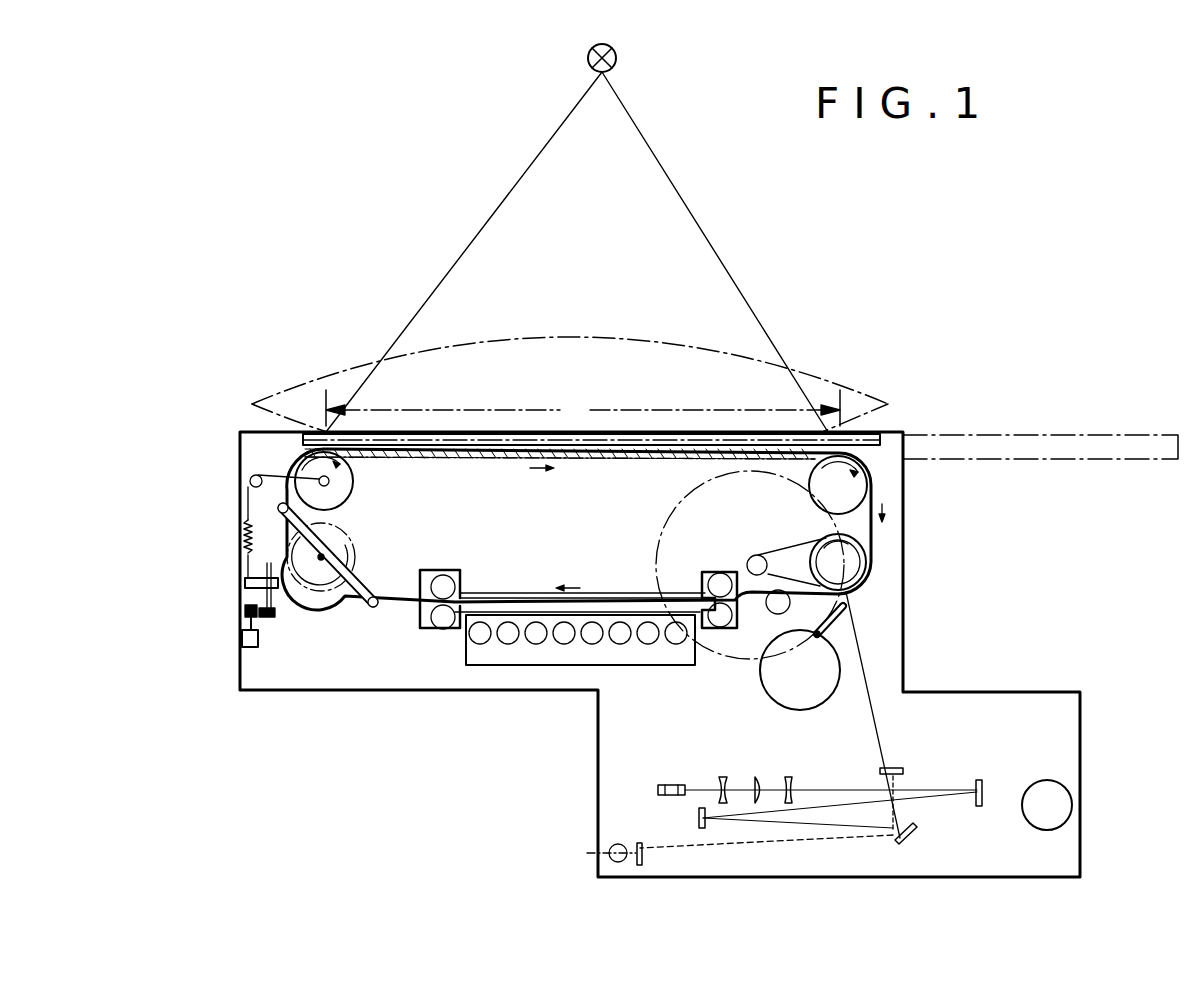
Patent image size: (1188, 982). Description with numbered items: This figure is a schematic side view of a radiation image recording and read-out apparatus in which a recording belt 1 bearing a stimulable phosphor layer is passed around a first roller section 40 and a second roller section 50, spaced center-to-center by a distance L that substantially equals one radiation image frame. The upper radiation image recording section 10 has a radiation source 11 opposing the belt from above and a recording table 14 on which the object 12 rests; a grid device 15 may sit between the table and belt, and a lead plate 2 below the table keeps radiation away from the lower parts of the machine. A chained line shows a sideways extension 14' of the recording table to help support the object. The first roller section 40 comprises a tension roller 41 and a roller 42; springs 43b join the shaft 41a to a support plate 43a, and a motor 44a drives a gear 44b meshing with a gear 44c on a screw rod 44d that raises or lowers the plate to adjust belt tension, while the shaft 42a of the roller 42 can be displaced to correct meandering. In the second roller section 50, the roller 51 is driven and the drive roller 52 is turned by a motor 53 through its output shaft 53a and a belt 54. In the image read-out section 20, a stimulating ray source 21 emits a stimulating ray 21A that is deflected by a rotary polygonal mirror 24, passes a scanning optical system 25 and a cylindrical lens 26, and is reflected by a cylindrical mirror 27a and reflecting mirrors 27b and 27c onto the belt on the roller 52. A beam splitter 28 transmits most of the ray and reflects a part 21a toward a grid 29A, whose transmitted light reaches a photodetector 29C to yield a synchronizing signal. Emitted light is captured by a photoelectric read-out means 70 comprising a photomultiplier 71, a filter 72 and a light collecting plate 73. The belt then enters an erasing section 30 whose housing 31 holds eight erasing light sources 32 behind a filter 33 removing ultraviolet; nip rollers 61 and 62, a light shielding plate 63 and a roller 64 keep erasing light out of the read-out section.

The recording belt 1 is at (482, 452).
The lead plate 2 is at (470, 456).
The radiation image recording section 10 is at (770, 315).
The radiation source 11 is at (617, 60).
The object 12 is at (578, 338).
The recording table 14 is at (617, 420).
The original platen extension 14' is at (1040, 427).
The grid device 15 is at (648, 437).
The distance L is at (583, 408).
The image read-out section 20 is at (906, 616).
The stimulating ray source 21 is at (1072, 797).
The stimulating ray 21A is at (870, 672).
The reflected part of the stimulating ray 21a is at (794, 838).
The rotary polygonal mirror 24 is at (670, 785).
The scanning optical system 25 is at (760, 766).
The cylindrical lens 26 is at (790, 777).
The cylindrical mirror 27a is at (981, 781).
The reflecting mirror 27b is at (698, 818).
The reflecting mirror 27c is at (913, 829).
The beam splitter 28 is at (896, 767).
The grid 29A is at (645, 855).
The photodetector 29C is at (593, 855).
The erasing section 30 is at (561, 674).
The housing 31 is at (608, 665).
The erasing light sources 32 is at (466, 640).
The filter 33 is at (500, 604).
The first roller section 40 is at (401, 470).
The tension roller 41 is at (353, 477).
The shaft 41a is at (315, 475).
The roller 42 is at (342, 540).
The shaft 42a is at (349, 551).
The support plate 43a is at (244, 584).
The springs 43b is at (246, 540).
The motor 44a is at (240, 640).
The gear 44b is at (243, 611).
The gear 44c is at (268, 620).
The screw rod 44d is at (274, 602).
The second roller section 50 is at (748, 485).
The roller 51 is at (809, 490).
The drive roller 52 is at (822, 543).
The motor 53 is at (672, 520).
The output shaft 53a is at (750, 558).
The belt 54 is at (792, 562).
The nip rollers 61 is at (454, 588).
The nip rollers 62 is at (706, 584).
The light shielding plate 63 is at (420, 623).
The roller 64 is at (769, 613).
The photoelectric read-out means 70 is at (768, 679).
The photomultiplier 71 is at (771, 700).
The filter 72 is at (842, 618).
The light collecting plate 73 is at (851, 603).